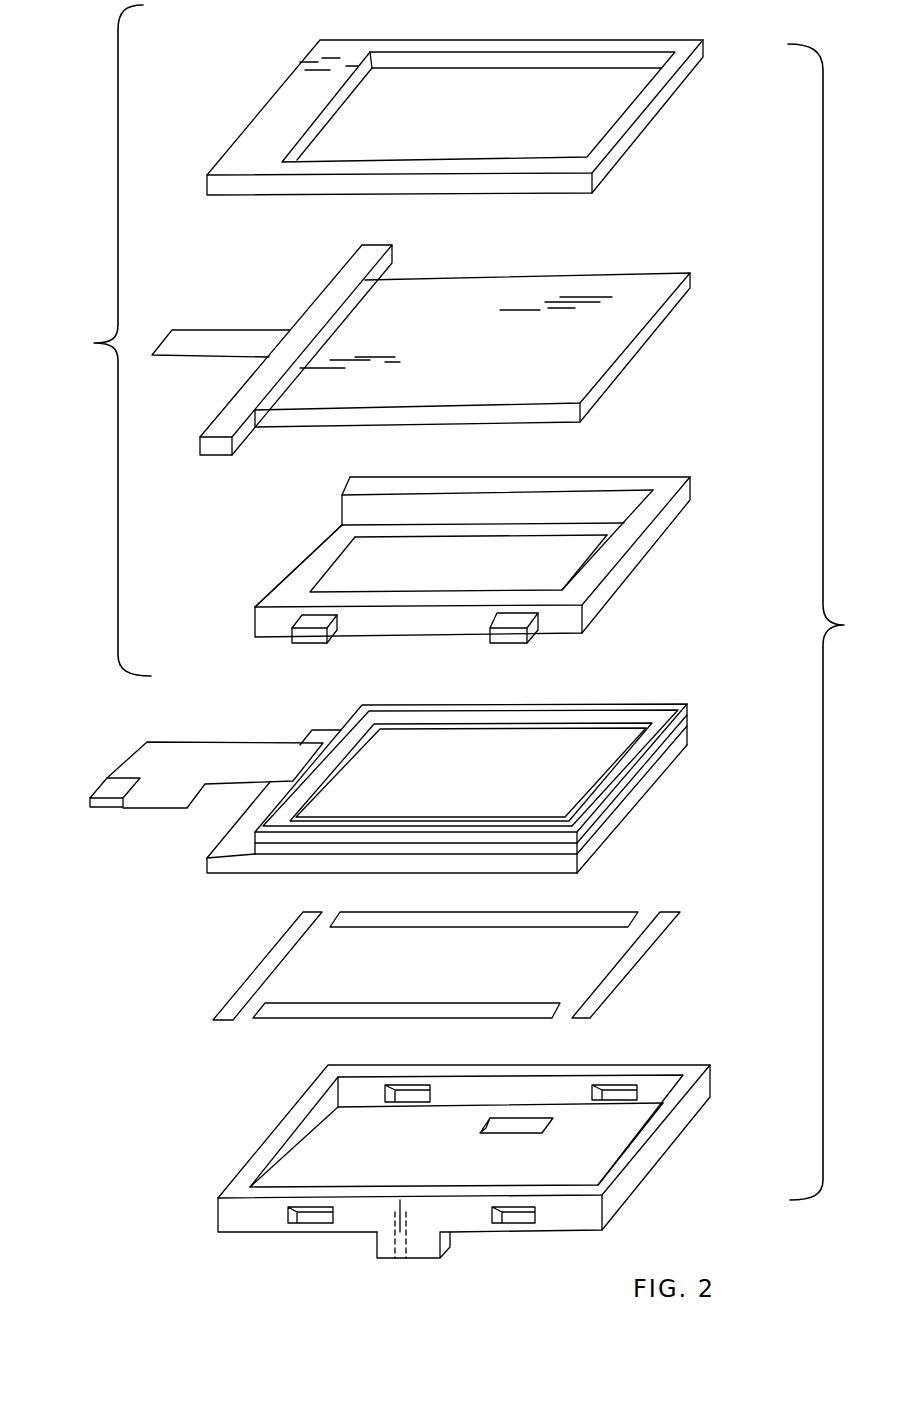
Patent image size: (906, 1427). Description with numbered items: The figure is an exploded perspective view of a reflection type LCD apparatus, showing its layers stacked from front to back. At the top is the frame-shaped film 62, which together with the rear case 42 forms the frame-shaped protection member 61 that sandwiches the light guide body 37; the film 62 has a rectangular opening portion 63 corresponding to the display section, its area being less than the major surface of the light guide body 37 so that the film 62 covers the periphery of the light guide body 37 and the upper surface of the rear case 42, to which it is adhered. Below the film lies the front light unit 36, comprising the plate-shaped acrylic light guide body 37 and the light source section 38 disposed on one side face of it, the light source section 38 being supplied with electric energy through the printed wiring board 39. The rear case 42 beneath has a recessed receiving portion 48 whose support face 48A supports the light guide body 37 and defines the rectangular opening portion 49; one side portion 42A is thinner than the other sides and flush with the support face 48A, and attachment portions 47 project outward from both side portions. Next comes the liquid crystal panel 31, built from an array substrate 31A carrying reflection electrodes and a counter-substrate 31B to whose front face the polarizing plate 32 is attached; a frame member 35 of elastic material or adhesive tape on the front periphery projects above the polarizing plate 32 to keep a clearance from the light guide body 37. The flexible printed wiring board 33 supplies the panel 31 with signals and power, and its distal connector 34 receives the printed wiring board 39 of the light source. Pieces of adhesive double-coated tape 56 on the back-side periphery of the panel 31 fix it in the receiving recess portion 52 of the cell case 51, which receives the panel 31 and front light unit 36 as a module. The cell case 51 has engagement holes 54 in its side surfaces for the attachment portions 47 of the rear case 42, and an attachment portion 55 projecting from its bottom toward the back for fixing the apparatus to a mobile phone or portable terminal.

The liquid crystal panel 31 is at (490, 765).
The array substrate 31A is at (630, 812).
The counter-substrate 31B is at (689, 723).
The polarizing plate 32 is at (633, 735).
The flexible printed wiring board 33 is at (178, 749).
The connector 34 is at (108, 800).
The frame member 35 is at (621, 706).
The front light unit 36 is at (105, 340).
The light guide body 37 is at (548, 285).
The light source section 38 is at (371, 252).
The printed wiring board 39 is at (178, 347).
The rear case 42 is at (473, 566).
The side portion 42A is at (312, 566).
The attachment portion 47 is at (310, 640).
The receiving portion 48 is at (540, 512).
The support face 48A is at (484, 532).
The opening portion 49 is at (406, 560).
The cell case 51 is at (471, 1161).
The receiving recess portion 52 is at (685, 1064).
The engagement hole 54 is at (428, 1083).
The attachment portion 55 is at (410, 1252).
The adhesive double-coated tape 56 is at (658, 922).
The frame-shaped protection member 61 is at (476, 247).
The frame-shaped film 62 is at (505, 45).
The opening portion 63 is at (370, 52).